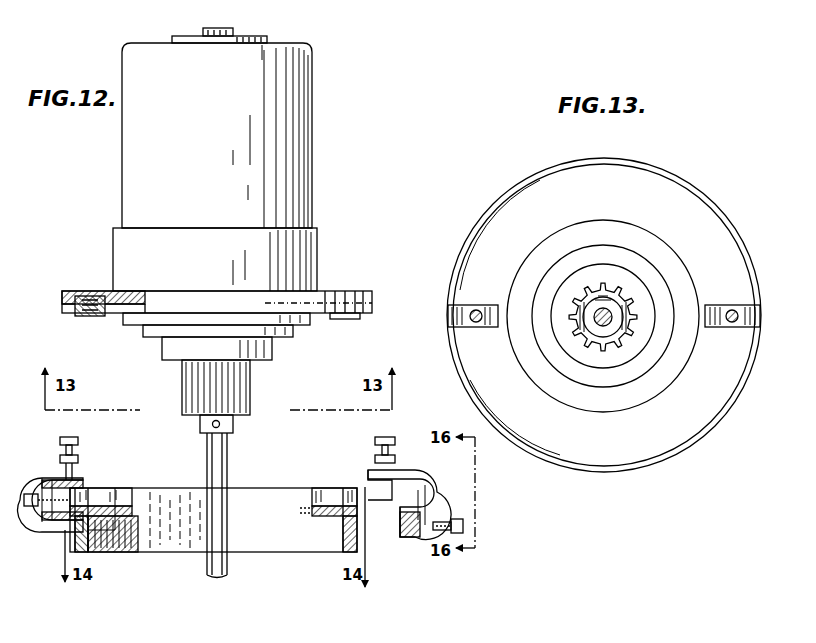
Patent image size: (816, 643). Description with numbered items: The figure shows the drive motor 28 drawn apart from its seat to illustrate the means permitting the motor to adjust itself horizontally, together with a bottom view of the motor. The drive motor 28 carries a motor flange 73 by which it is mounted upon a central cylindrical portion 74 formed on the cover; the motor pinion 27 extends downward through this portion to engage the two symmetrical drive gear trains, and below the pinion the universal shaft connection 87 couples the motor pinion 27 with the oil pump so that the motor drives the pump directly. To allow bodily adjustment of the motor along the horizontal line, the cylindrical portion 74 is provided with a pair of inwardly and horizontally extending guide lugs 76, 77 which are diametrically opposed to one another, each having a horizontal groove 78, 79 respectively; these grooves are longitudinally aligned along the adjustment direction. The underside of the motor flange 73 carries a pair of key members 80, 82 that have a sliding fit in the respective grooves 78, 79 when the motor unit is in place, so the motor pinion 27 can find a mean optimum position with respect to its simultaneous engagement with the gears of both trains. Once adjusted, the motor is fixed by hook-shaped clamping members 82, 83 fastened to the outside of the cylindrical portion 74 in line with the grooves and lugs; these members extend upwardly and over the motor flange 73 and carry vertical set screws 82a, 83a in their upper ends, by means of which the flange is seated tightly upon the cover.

In FIG. 12, the motor pinion 27 is at (182, 384).
In FIG. 13, the motor pinion 27 is at (603, 307).
In FIG. 12, the drive motor 28 is at (310, 188).
In FIG. 12, the motor flange 73 is at (347, 291).
In FIG. 13, the motor flange 73 is at (645, 450).
In FIG. 12, the central cylindrical portion 74 is at (262, 504).
In FIG. 12, the guide lug 76 is at (122, 504).
In FIG. 12, the guide lug 77 is at (312, 502).
In FIG. 12, the horizontal groove 78 is at (88, 500).
In FIG. 12, the horizontal groove 79 is at (335, 497).
In FIG. 12, the key member 80 is at (107, 313).
In FIG. 13, the key member 80 is at (489, 327).
In FIG. 12, the key member 82 is at (352, 316).
In FIG. 13, the key member 82 is at (727, 327).
In FIG. 12, the set screw 82a is at (72, 440).
In FIG. 12, the hook-shaped clamping member 83 is at (432, 484).
In FIG. 12, the set screw 83a is at (384, 444).
In FIG. 12, the universal shaft connection 87 is at (207, 462).
In FIG. 13, the universal shaft connection 87 is at (603, 322).